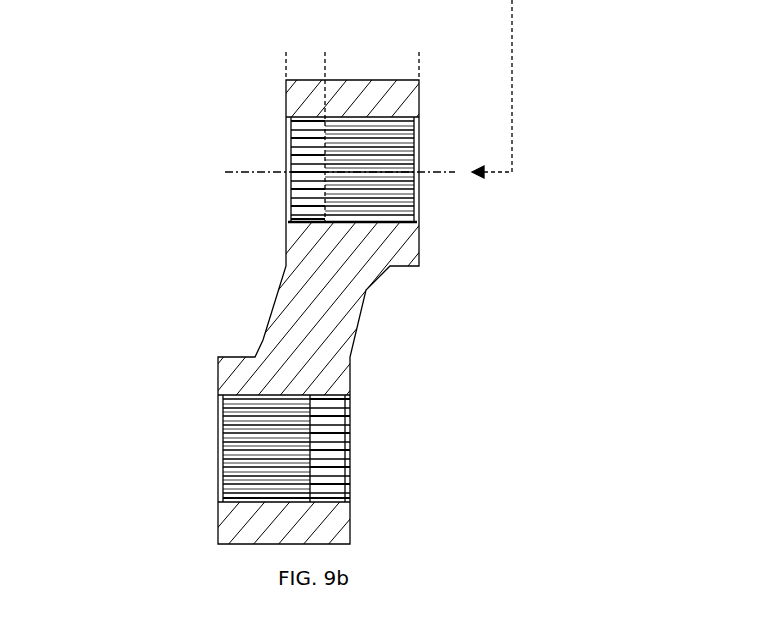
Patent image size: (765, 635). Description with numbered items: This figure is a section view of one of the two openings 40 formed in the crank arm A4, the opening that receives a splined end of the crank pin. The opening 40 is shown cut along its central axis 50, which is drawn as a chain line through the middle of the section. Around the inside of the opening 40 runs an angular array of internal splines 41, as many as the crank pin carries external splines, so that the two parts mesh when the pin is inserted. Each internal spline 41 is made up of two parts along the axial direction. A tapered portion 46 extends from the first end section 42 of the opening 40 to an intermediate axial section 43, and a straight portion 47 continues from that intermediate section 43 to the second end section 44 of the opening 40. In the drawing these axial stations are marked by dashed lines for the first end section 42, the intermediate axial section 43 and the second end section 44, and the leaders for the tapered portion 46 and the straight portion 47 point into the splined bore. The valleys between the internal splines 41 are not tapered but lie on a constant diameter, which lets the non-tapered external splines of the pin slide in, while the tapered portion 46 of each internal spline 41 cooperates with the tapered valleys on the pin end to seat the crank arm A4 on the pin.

The opening 40 is at (410, 202).
The internal splines 41 is at (333, 117).
The first end section 42 is at (424, 55).
The intermediate axial section 43 is at (324, 127).
The second end section 44 is at (288, 55).
The tapered portion 46 is at (362, 224).
The straight portion 47 is at (306, 212).
The central axis 50 is at (250, 170).
The crank arm A4 is at (255, 318).